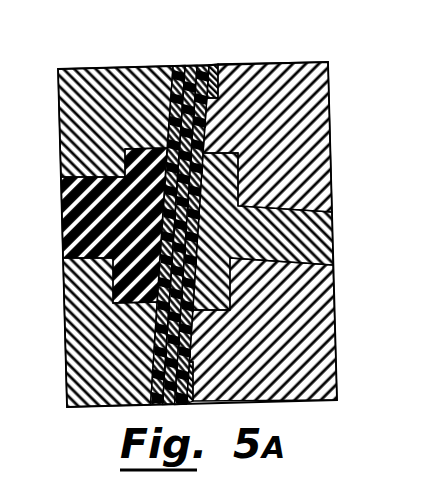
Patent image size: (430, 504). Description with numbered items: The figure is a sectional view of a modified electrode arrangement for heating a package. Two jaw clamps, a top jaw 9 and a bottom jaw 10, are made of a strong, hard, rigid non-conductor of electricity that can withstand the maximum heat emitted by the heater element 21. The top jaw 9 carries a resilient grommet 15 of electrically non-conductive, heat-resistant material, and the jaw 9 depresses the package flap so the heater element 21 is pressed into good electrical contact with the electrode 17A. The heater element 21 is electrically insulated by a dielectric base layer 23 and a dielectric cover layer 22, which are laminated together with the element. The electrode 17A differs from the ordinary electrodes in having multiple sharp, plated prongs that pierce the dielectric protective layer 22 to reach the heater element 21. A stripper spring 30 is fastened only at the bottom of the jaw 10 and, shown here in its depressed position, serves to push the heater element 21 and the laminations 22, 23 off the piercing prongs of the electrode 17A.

The top jaw clamp 9 is at (70, 140).
The bottom jaw clamp 10 is at (318, 117).
The resilient grommet 15 is at (78, 222).
The electrode 17A is at (334, 244).
The heater element 21 is at (193, 66).
The dielectric cover layer 22 is at (178, 67).
The dielectric base layer 23 is at (181, 66).
The stripper spring 30 is at (215, 66).